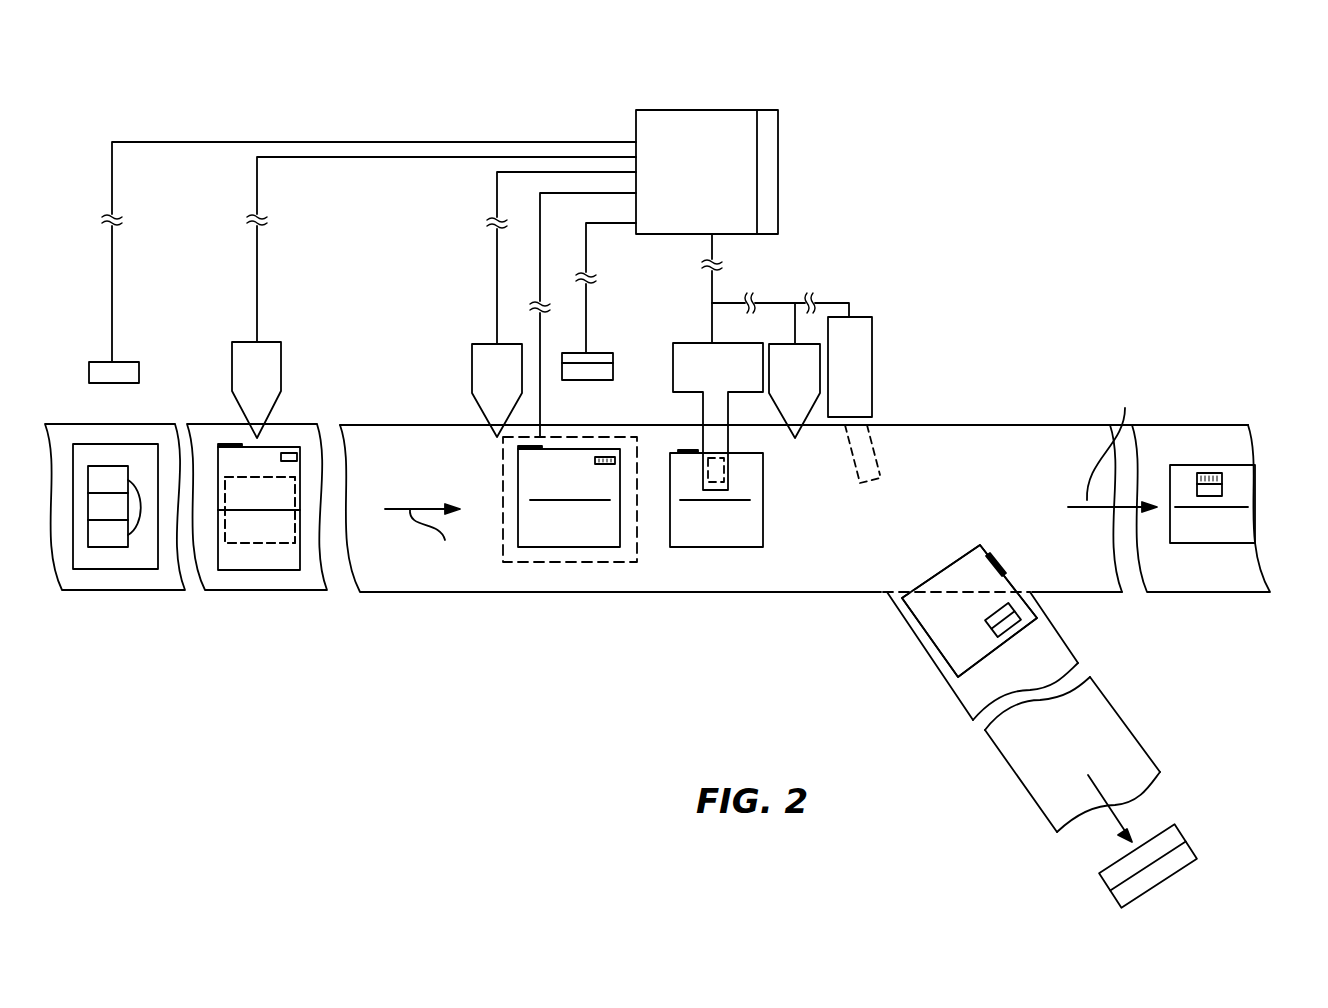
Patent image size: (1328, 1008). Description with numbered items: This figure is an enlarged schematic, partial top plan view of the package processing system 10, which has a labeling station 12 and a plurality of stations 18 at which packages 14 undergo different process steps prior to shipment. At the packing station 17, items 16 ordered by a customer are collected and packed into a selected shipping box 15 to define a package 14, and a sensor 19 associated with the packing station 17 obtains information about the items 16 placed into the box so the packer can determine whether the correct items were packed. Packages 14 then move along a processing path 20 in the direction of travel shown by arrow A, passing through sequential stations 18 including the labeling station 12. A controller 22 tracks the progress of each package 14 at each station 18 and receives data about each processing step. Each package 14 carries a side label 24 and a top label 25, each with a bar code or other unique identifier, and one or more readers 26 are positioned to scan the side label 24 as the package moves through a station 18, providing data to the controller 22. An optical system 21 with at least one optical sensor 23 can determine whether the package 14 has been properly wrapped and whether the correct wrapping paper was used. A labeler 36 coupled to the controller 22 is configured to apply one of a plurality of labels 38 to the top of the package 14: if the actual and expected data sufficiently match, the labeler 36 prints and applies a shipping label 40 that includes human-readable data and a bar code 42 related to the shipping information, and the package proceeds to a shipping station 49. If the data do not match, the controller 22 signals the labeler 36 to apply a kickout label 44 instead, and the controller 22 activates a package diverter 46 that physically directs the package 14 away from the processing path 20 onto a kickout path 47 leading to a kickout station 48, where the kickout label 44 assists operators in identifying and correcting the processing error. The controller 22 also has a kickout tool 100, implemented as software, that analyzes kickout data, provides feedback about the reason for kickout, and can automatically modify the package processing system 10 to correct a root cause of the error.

The package processing system 10 is at (1127, 202).
The labeling station 12 is at (344, 123).
The package 14 is at (297, 457).
The shipping box 15 is at (237, 570).
The items 16 is at (133, 505).
The packing station 17 is at (118, 612).
The station 18 is at (225, 612).
The sensor 19 is at (118, 362).
The processing path 20 is at (405, 425).
The optical system 21 is at (613, 357).
The controller 22 is at (676, 112).
The optical sensor 23 is at (613, 372).
The side label 24 is at (232, 447).
The top label 25 is at (285, 453).
The reader 26 is at (232, 340).
The labeler 36 is at (673, 350).
The labels 38 is at (716, 458).
The shipping label 40 is at (1218, 473).
The bar code 42 is at (1200, 473).
The kickout label 44 is at (1050, 610).
The package diverter 46 is at (872, 325).
The kickout path 47 is at (973, 717).
The kickout station 48 is at (1180, 828).
The shipping station 49 is at (1248, 425).
The kickout tool 100 is at (765, 113).